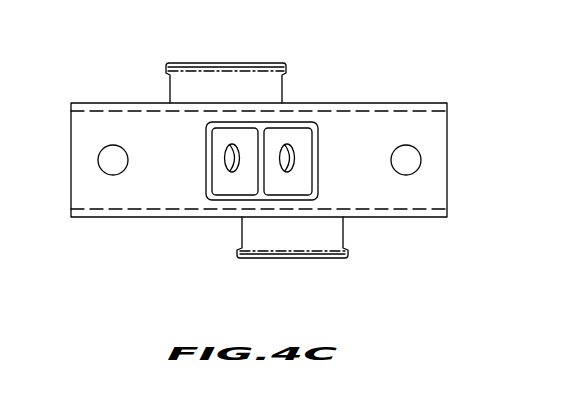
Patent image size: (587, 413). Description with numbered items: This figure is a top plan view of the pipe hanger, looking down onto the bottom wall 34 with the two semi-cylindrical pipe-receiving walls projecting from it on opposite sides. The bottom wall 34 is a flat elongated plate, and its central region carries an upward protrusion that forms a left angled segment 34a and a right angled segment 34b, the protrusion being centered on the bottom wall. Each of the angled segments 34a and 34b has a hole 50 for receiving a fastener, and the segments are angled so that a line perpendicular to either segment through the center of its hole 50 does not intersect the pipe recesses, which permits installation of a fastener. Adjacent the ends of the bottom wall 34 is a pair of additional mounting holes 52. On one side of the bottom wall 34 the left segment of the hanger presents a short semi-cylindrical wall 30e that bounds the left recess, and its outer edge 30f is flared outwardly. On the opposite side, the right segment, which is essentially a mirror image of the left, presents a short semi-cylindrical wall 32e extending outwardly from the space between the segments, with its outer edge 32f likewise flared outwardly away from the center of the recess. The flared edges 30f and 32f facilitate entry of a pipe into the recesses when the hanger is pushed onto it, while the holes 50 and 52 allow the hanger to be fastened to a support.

The bottom wall 34 is at (438, 188).
The left angled segment 34a is at (213, 160).
The right angled segment 34b is at (300, 168).
The hole 50 is at (289, 157).
The mounting hole 52 is at (108, 163).
The semi-cylindrical wall 30e is at (168, 88).
The outer edge 30f is at (165, 68).
The semi-cylindrical wall 32e is at (343, 230).
The outer edge 32f is at (349, 258).